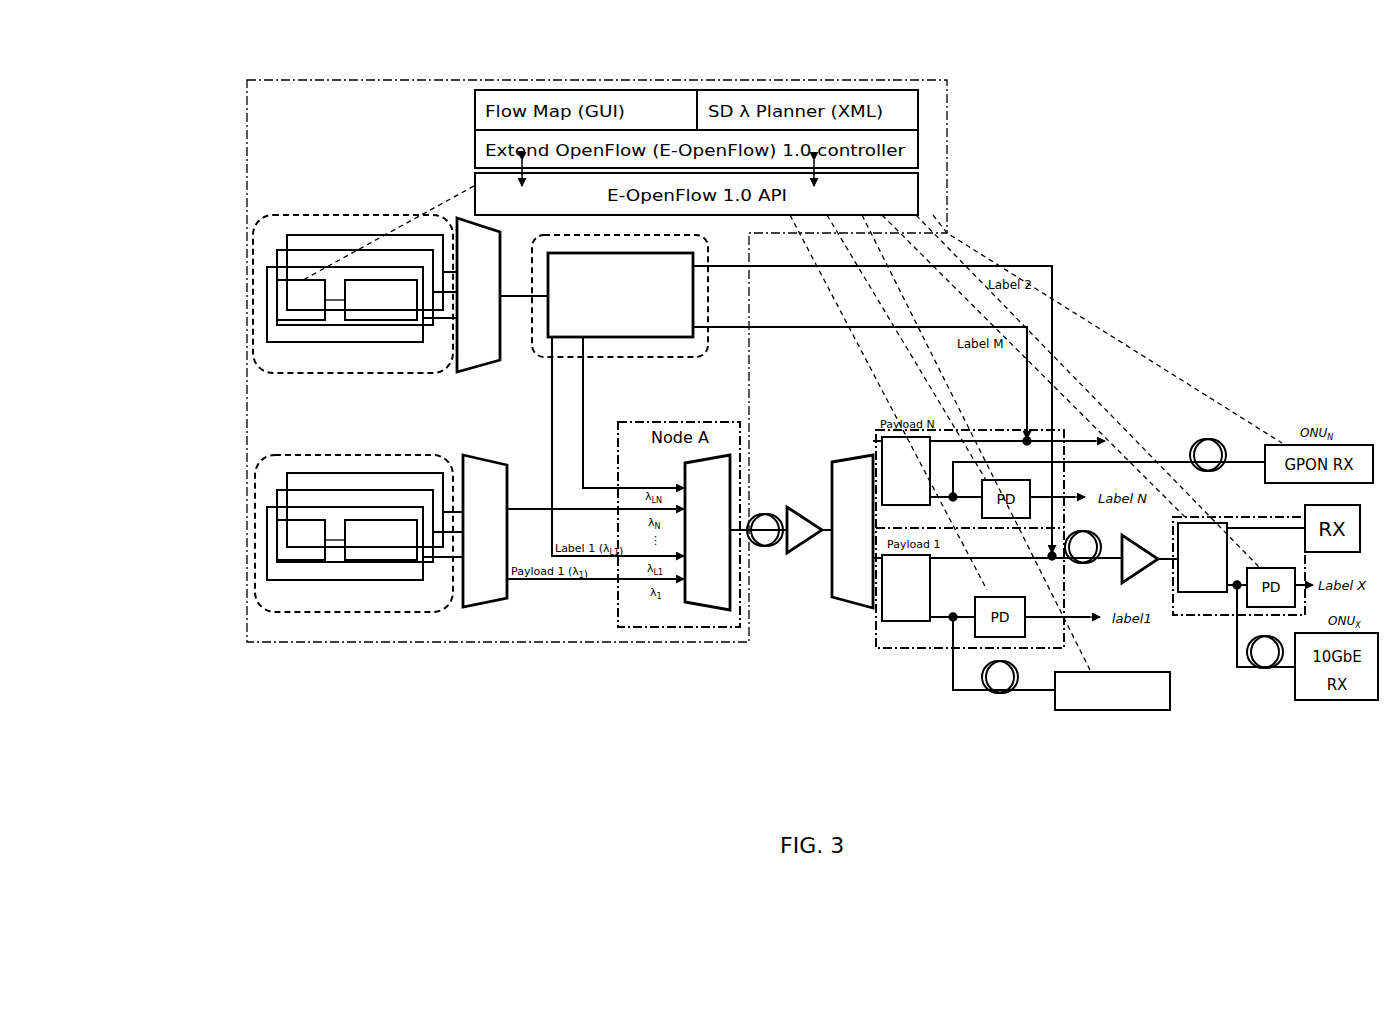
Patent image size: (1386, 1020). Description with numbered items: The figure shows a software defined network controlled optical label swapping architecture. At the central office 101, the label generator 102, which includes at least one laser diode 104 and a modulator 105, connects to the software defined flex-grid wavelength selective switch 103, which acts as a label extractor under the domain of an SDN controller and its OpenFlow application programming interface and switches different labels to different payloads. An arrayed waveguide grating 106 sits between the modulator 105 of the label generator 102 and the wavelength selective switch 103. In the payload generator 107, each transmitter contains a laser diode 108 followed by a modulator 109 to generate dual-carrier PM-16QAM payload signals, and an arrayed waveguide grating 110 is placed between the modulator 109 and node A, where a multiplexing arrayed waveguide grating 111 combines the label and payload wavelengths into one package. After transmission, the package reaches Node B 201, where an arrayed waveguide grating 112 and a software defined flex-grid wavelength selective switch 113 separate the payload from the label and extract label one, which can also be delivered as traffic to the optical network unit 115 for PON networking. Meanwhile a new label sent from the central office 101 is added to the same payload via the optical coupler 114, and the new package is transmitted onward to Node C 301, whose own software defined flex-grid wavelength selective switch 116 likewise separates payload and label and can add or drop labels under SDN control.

The central office 101 is at (408, 80).
The label generator 102 is at (338, 215).
The software defined flex-grid wavelength selective switch 103 is at (600, 253).
The laser diode 104 is at (275, 322).
The modulator 105 is at (347, 320).
The arrayed waveguide grating 106 is at (458, 368).
The payload generator 107 is at (255, 506).
The laser diode 108 is at (277, 553).
The modulator 109 is at (347, 560).
The arrayed waveguide grating 110 is at (463, 607).
The Node A multiplexing AWG 111 is at (686, 600).
The arrayed waveguide grating 112 is at (845, 600).
The software defined flex-grid wavelength selective switch 113 is at (878, 610).
The optical coupler 114 is at (1056, 549).
The optical network unit 115 is at (1110, 711).
The software defined flex-grid wavelength selective switch 116 is at (1207, 598).
The Node B 201 is at (877, 648).
The Node C 301 is at (1252, 515).